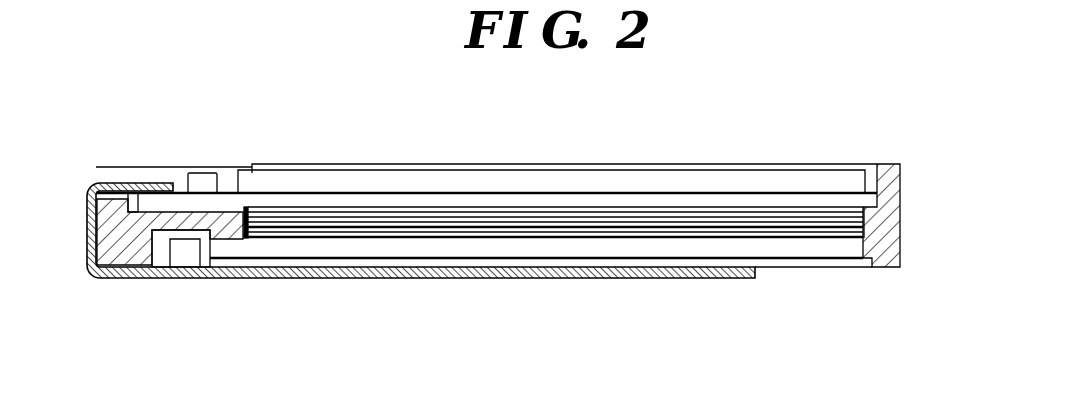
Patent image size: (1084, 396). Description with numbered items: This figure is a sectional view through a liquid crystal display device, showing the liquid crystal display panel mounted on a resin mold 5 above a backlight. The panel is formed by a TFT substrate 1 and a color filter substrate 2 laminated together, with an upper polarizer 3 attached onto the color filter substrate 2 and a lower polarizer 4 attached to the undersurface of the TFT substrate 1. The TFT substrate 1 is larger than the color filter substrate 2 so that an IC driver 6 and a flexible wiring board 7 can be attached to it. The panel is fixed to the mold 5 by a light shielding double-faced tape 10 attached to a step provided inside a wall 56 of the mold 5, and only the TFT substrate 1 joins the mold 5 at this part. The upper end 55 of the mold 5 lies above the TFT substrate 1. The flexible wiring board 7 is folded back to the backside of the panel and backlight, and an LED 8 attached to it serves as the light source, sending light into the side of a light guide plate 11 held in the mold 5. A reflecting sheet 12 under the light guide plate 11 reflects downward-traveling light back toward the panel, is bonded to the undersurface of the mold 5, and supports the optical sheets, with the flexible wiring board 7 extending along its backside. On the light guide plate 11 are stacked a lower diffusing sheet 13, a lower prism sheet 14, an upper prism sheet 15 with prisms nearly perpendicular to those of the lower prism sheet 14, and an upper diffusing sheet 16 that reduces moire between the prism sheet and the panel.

The TFT substrate 1 is at (724, 199).
The color filter substrate 2 is at (680, 184).
The upper polarizer 3 is at (607, 165).
The lower polarizer 4 is at (761, 211).
The mold 5 is at (131, 263).
The IC driver 6 is at (207, 173).
The flexible wiring board 7 is at (108, 182).
The LED 8 is at (184, 256).
The light shielding double-faced tape 10 is at (182, 207).
The light guide plate 11 is at (827, 252).
The reflecting sheet 12 is at (781, 270).
The lower diffusing sheet 13 is at (852, 240).
The lower prism sheet 14 is at (867, 228).
The upper prism sheet 15 is at (850, 224).
The upper diffusing sheet 16 is at (808, 219).
The upper end 55 is at (885, 164).
The wall 56 is at (95, 166).